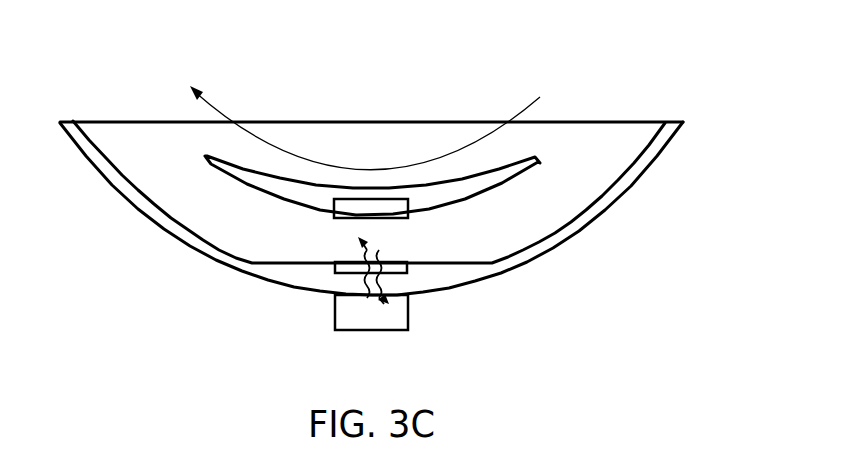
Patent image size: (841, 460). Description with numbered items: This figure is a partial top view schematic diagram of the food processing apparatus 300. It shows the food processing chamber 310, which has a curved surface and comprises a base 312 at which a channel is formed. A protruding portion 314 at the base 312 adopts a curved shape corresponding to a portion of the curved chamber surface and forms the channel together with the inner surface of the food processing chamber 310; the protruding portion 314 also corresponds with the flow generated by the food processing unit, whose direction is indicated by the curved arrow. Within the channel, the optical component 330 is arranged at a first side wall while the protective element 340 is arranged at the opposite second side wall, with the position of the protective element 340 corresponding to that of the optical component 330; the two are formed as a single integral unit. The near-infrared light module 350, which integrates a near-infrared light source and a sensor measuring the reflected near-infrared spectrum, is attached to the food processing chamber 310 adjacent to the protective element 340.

The food processing apparatus 300 is at (616, 62).
The food processing chamber 310 is at (581, 226).
The base 312 is at (415, 138).
The protruding portion 314 is at (497, 175).
The optical component 330 is at (353, 210).
The protective element 340 is at (407, 270).
The near-infrared light module 350 is at (397, 318).